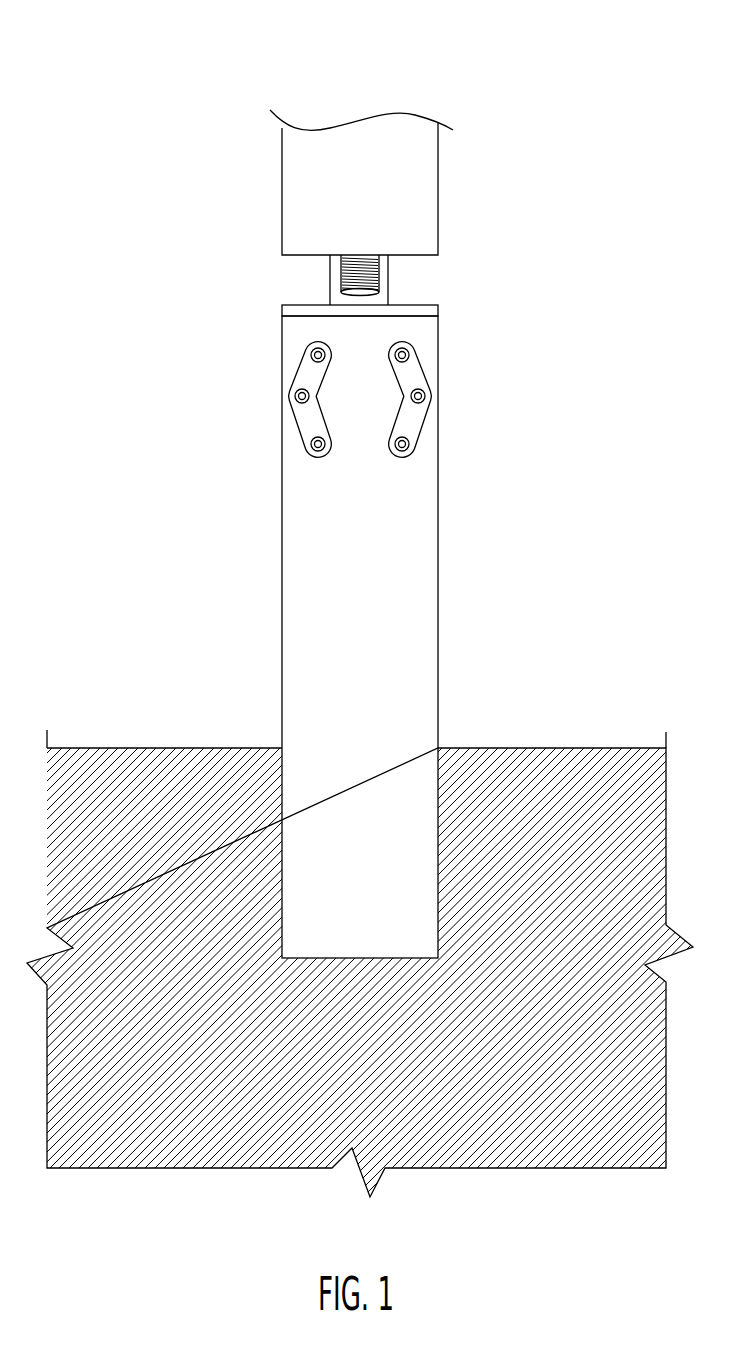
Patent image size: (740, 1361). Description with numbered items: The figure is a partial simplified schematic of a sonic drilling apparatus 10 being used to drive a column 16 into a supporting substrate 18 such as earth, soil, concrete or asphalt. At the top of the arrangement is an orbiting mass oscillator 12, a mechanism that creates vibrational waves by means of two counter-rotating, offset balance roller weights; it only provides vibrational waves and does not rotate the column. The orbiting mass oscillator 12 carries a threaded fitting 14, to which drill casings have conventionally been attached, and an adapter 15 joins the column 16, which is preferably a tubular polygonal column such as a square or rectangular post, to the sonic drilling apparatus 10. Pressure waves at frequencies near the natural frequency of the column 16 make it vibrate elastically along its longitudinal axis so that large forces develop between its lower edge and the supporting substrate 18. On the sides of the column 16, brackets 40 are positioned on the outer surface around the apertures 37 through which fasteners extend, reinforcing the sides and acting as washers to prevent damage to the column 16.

The sonic drilling apparatus 10 is at (502, 91).
The orbiting mass oscillator 12 is at (425, 202).
The threaded fitting 14 is at (342, 281).
The adapter 15 is at (428, 305).
The column 16 is at (439, 500).
The supporting substrate 18 is at (540, 748).
The apertures 37 is at (424, 397).
The brackets 40 is at (410, 367).